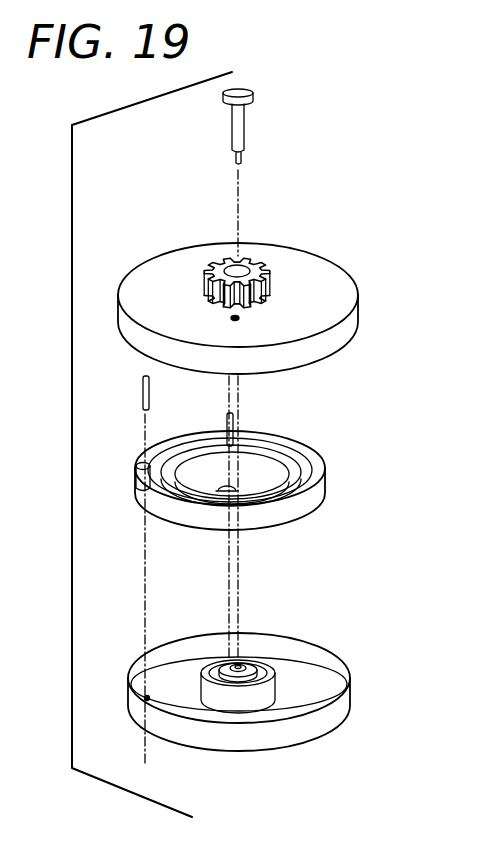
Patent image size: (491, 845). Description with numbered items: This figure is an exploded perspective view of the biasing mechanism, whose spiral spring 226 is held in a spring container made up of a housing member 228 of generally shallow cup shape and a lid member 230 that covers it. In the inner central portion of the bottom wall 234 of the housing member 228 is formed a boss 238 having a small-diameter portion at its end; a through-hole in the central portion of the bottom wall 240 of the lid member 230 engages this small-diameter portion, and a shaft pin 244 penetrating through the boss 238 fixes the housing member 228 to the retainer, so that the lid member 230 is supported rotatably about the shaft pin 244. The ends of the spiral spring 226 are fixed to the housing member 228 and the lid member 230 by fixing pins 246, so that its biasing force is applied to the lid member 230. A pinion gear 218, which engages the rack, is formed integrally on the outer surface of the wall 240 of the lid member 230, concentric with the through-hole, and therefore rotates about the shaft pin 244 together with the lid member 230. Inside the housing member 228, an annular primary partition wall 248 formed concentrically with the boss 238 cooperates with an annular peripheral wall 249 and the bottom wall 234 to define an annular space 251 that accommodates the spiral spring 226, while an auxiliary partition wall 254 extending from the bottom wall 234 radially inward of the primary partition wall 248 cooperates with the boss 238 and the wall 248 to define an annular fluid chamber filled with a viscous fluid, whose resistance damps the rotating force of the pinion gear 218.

The shaft pin 244 is at (244, 148).
The pinion gear 218 is at (262, 268).
The bottom wall of the lid member 240 is at (340, 281).
The lid member 230 is at (343, 332).
The fixing pins 246 is at (226, 421).
The spiral spring 226 is at (313, 506).
The bottom wall of the housing member 234 is at (307, 678).
The annular peripheral wall 249 is at (326, 722).
The boss 238 is at (255, 670).
The auxiliary partition wall 254 is at (208, 666).
The annular primary partition wall 248 is at (199, 685).
The annular space 251 is at (183, 700).
The housing member 228 is at (243, 694).